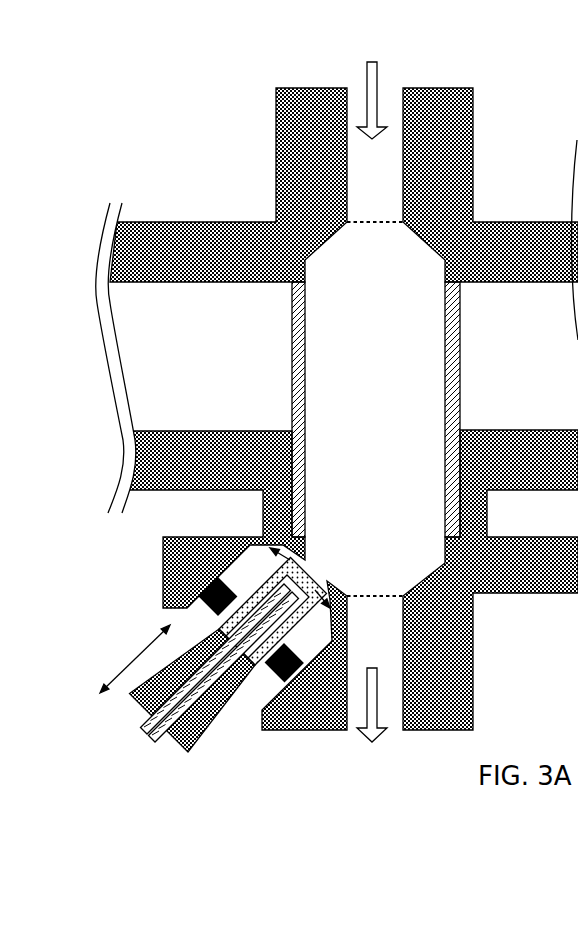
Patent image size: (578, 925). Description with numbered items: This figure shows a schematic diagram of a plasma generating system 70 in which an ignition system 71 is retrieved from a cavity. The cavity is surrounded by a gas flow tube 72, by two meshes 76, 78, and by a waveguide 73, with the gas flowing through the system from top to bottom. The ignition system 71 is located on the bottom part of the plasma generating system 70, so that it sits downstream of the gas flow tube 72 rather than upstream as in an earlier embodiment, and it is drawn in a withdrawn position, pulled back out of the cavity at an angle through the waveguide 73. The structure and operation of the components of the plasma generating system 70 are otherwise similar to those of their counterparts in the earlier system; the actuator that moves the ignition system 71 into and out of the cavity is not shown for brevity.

The plasma generating system 70 is at (337, 409).
The ignition system 71 is at (178, 759).
The gas flow tube 72 is at (291, 350).
The waveguide 73 is at (206, 431).
The mesh 76 is at (375, 223).
The mesh 78 is at (375, 595).